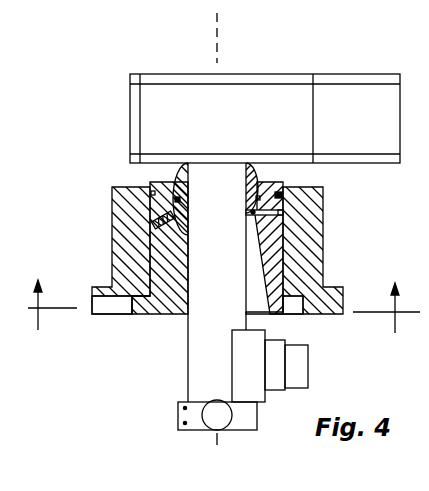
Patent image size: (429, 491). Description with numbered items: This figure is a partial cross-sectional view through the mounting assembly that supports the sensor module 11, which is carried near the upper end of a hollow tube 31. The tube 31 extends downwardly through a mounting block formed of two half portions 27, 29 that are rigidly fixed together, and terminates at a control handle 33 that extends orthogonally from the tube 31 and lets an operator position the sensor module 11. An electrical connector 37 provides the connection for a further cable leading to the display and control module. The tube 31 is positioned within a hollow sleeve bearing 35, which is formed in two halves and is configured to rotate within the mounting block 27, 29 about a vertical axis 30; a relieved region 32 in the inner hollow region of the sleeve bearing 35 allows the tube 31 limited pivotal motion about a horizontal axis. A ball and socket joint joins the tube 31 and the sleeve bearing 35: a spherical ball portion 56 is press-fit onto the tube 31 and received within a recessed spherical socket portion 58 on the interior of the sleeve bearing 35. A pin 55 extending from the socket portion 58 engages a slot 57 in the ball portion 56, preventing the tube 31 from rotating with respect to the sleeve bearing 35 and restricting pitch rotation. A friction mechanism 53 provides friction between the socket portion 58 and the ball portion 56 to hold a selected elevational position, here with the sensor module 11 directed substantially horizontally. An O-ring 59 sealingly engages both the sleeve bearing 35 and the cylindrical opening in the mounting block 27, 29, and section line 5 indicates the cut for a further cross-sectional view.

The section line 5- 5 is at (224, 295).
The sensor module 11 is at (353, 163).
The mounting block half portion 27 is at (307, 232).
The mounting block half portion 29 is at (113, 190).
The vertical axis 30 is at (217, 15).
The hollow tube 31 is at (203, 346).
The relieved region 32 is at (255, 312).
The control handle 33 is at (218, 412).
The sleeve bearing 35 is at (176, 302).
The electrical connector 37 is at (292, 357).
The friction mechanism 53 is at (152, 208).
The pin 55 is at (251, 211).
The spherical ball portion 56 is at (190, 187).
The slot 57 is at (255, 220).
The spherical socket portion 58 is at (172, 232).
The O-ring 59 is at (282, 194).